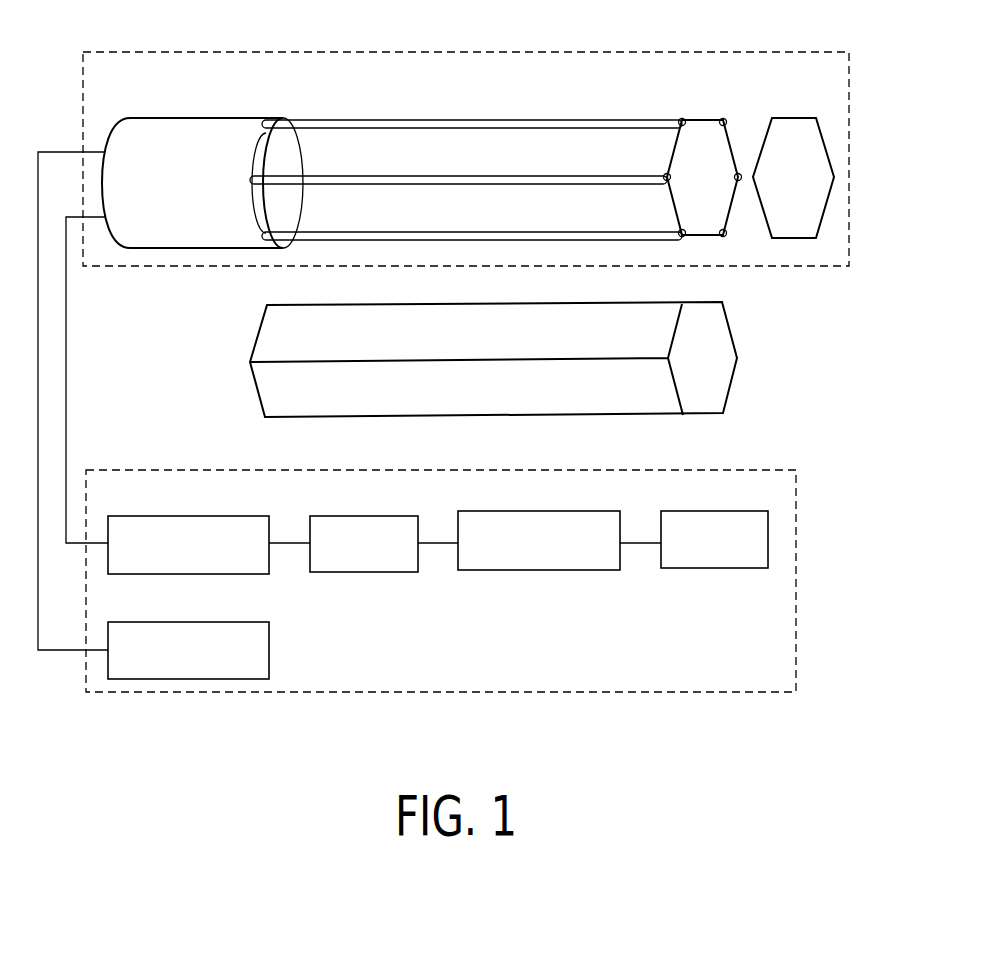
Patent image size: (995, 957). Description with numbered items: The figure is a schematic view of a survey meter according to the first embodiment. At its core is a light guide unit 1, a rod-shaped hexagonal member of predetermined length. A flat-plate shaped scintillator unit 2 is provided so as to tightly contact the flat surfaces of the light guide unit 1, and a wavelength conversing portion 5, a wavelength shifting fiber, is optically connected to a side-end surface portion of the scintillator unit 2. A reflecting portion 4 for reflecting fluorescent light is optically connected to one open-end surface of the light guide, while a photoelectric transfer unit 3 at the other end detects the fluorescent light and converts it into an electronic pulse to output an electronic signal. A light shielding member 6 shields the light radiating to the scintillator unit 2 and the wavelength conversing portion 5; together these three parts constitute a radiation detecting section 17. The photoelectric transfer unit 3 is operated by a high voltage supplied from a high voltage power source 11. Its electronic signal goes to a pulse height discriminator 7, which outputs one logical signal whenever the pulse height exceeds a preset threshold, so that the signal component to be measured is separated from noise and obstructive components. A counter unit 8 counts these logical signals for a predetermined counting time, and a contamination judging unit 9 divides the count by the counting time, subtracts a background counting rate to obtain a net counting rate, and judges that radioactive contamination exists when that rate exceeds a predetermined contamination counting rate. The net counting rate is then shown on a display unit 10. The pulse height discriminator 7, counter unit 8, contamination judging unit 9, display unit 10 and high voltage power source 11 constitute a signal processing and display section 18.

The light guide unit 1 is at (704, 142).
The scintillator unit 2 is at (330, 143).
The photoelectric transfer unit 3 is at (190, 118).
The reflecting portion 4 is at (800, 140).
The wavelength conversing portion 5 is at (403, 120).
The light shielding member 6 is at (252, 340).
The pulse height discriminator 7 is at (232, 516).
The counter unit 8 is at (378, 516).
The contamination judging unit 9 is at (583, 511).
The display unit 10 is at (730, 511).
The high voltage power source 11 is at (217, 622).
The radiation detecting section 17 is at (793, 52).
The signal processing and display section 18 is at (745, 470).